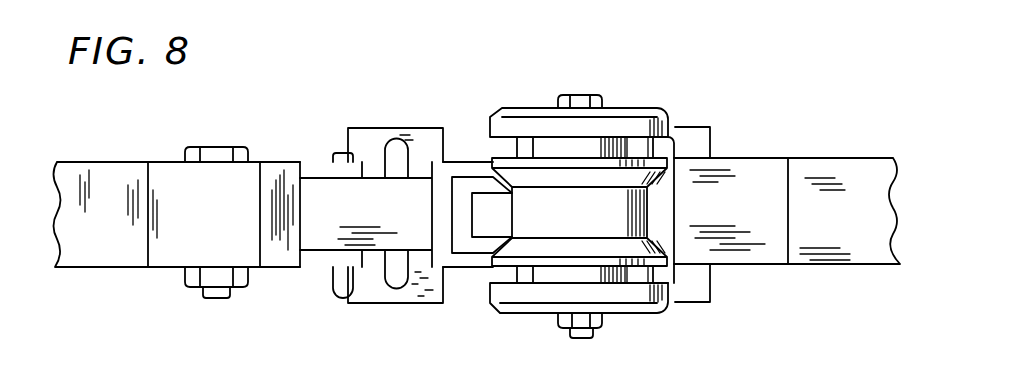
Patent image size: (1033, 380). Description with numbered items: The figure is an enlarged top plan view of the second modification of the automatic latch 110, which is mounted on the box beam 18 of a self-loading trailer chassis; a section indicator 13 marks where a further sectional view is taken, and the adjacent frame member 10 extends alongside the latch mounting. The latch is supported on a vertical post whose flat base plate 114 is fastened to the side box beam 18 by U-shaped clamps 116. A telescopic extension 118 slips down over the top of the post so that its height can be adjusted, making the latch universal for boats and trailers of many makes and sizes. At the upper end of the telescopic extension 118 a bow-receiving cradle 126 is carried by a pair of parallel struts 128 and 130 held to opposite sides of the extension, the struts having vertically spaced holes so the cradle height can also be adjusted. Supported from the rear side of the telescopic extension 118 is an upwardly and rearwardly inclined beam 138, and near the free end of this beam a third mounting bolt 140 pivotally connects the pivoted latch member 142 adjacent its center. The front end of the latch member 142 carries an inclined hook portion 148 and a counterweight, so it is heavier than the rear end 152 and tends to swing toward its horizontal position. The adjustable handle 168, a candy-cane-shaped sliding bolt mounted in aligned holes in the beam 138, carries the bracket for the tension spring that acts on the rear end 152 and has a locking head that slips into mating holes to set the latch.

The first frame member 10 is at (79, 263).
The box beam 18 is at (848, 238).
The section line 13- 13 is at (233, 248).
The automatic latch 110 is at (609, 74).
The flat base plate 114 is at (418, 182).
The U-shaped clamps 116 is at (398, 283).
The telescopic extension 118 is at (475, 168).
The bow-receiving cradle 126 is at (529, 200).
The parallel strut 128 is at (591, 147).
The parallel strut 130 is at (560, 273).
The inclined beam 138 is at (367, 303).
The third mounting bolt 140 is at (217, 298).
The pivoted latch member 142 is at (158, 175).
The inclined hook portion 148 is at (272, 257).
The rear end 152 is at (147, 250).
The adjustable handle 168 is at (340, 293).